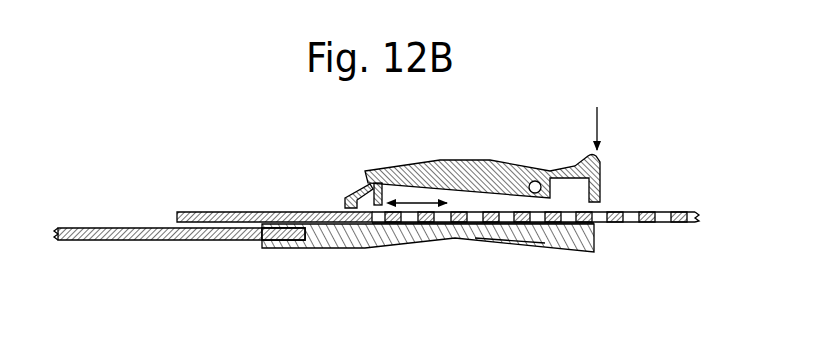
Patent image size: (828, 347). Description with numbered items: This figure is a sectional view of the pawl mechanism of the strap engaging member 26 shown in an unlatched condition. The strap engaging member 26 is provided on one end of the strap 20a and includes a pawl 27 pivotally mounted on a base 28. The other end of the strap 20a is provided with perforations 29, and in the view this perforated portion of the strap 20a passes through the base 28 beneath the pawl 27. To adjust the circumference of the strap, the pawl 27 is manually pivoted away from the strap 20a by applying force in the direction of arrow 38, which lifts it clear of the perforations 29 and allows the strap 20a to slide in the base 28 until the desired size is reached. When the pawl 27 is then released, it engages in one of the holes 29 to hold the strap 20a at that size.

The strap 20a is at (110, 228).
The strap engaging member 26 is at (431, 193).
The pawl 27 is at (402, 161).
The base 28 is at (538, 241).
The perforations 29 is at (442, 224).
The arrow 38 is at (599, 118).